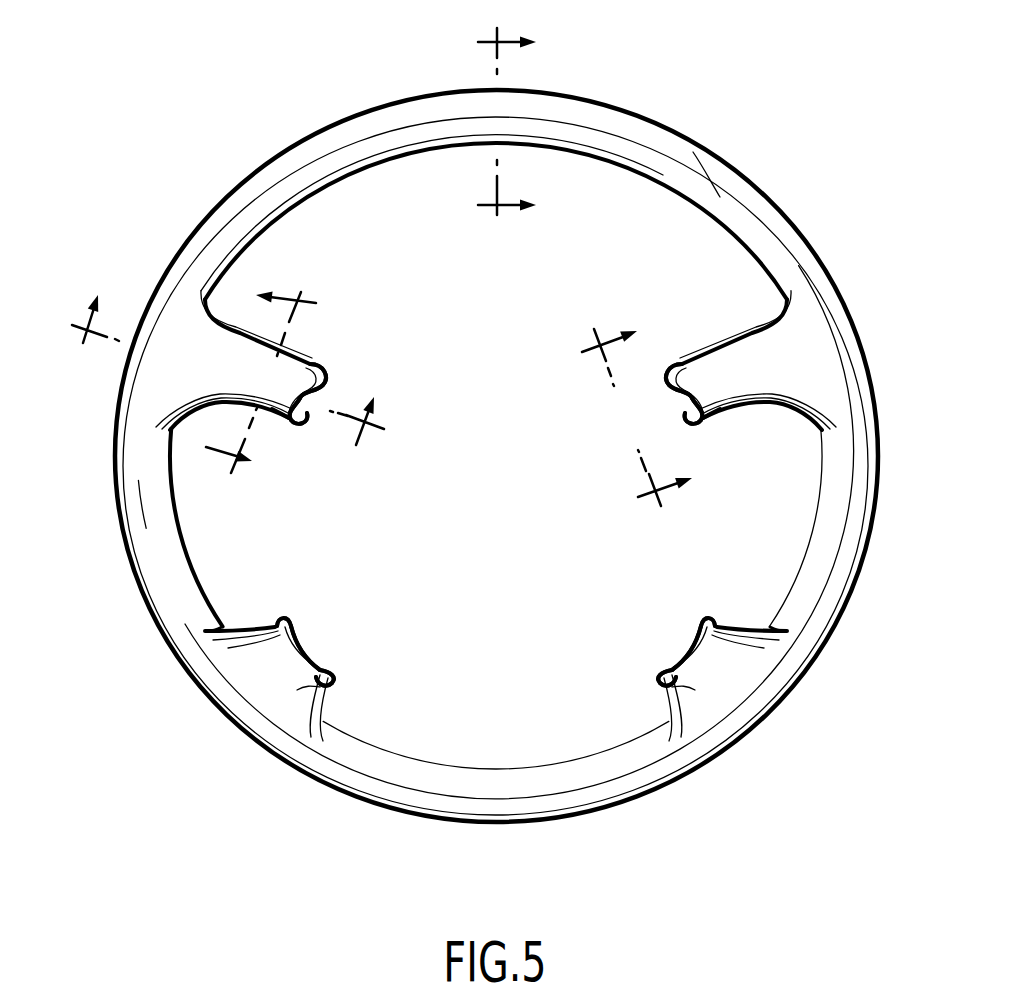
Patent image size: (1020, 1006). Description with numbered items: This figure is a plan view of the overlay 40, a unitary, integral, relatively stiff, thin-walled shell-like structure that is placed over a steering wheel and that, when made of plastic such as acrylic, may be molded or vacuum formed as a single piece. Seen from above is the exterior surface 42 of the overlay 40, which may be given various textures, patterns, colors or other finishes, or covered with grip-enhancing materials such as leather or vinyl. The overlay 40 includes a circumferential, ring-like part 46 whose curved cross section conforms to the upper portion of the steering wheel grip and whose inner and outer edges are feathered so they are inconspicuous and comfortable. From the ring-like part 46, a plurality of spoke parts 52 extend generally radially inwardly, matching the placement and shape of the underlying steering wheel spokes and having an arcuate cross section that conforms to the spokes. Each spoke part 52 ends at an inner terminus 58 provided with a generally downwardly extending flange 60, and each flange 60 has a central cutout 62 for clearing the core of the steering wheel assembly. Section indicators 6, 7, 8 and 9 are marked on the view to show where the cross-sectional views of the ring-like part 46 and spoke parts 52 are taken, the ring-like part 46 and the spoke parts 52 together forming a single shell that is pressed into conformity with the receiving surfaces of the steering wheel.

The overlay 40 is at (522, 456).
The exterior surface 42 is at (790, 249).
The ring-like part 46 is at (877, 392).
The spoke parts 52 is at (280, 377).
The inner terminus 58 is at (290, 422).
The flange 60 is at (688, 422).
The central cutout 62 is at (316, 391).
The section line 6- 6 is at (503, 122).
The section line 7- 7 is at (218, 382).
The section line 8- 8 is at (261, 380).
The section line 9- 9 is at (631, 424).